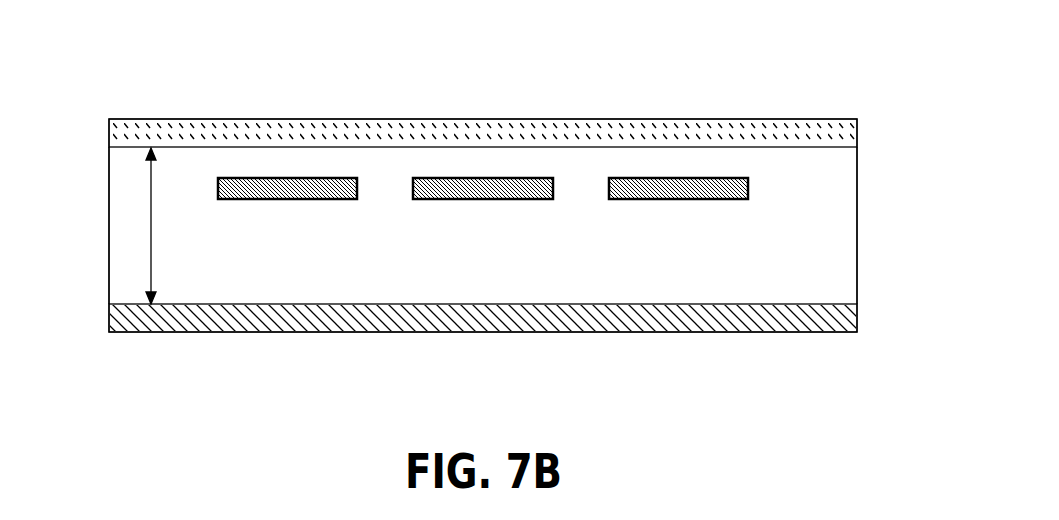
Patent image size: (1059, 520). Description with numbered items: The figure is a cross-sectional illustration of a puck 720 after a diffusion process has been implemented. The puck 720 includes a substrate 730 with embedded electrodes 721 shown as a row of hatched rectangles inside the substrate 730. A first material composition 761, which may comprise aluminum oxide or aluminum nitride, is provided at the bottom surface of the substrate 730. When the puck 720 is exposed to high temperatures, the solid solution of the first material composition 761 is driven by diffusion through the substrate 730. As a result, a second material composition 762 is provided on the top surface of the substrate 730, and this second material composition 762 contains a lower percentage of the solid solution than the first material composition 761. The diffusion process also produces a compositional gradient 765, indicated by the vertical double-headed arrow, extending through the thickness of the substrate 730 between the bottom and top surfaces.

The puck 720 is at (776, 65).
The second material composition 762 is at (373, 133).
The embedded electrodes 721 is at (487, 178).
The compositional gradient 765 is at (150, 240).
The first material composition 761 is at (415, 331).
The substrate 730 is at (815, 282).